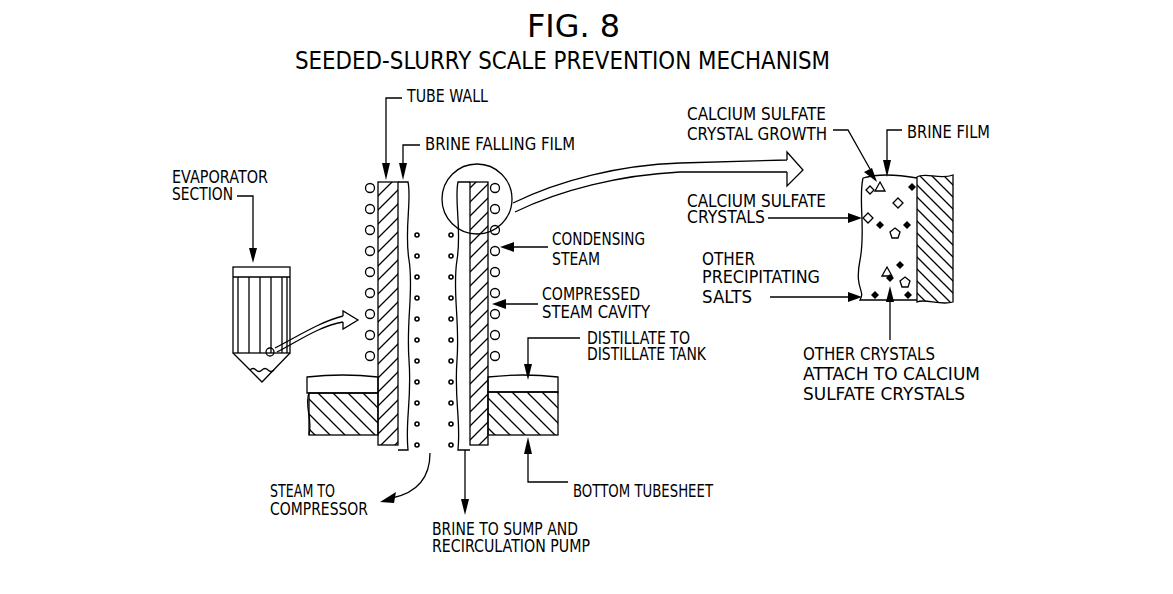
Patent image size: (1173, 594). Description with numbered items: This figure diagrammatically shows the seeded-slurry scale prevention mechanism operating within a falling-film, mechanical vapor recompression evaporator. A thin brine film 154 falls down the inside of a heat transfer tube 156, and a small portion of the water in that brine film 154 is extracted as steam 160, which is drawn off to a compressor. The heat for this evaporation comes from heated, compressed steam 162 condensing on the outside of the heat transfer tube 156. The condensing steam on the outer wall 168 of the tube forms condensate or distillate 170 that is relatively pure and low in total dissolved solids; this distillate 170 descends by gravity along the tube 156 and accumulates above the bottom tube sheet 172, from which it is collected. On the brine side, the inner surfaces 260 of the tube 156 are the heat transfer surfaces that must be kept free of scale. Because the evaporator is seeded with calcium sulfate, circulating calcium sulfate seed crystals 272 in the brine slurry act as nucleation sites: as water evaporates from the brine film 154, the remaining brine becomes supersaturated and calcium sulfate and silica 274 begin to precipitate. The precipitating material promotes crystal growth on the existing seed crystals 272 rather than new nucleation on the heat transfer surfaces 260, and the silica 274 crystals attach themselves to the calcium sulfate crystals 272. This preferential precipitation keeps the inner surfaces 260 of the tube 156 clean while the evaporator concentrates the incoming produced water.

The brine film 154 is at (414, 140).
The heat transfer tube 156 is at (383, 445).
The steam 160 is at (412, 483).
The compressed steam 162 is at (548, 247).
The outer wall 168 is at (366, 194).
The distillate 170 is at (555, 388).
The bottom tube sheet 172 is at (557, 422).
The inner surfaces 260 is at (408, 250).
The calcium sulfate seed crystals 272 is at (823, 220).
The silica 274 is at (888, 323).